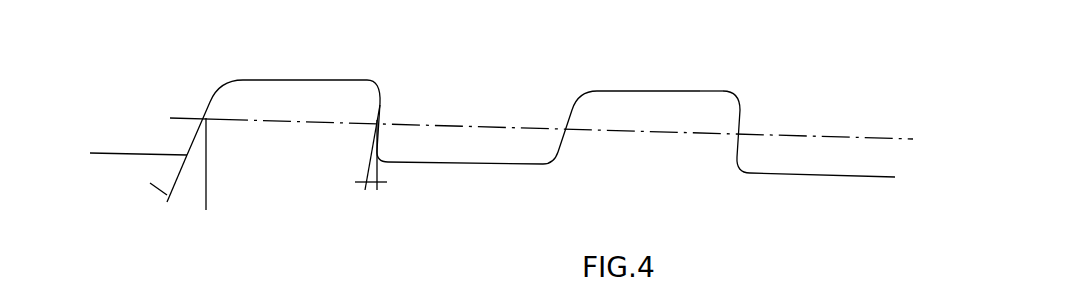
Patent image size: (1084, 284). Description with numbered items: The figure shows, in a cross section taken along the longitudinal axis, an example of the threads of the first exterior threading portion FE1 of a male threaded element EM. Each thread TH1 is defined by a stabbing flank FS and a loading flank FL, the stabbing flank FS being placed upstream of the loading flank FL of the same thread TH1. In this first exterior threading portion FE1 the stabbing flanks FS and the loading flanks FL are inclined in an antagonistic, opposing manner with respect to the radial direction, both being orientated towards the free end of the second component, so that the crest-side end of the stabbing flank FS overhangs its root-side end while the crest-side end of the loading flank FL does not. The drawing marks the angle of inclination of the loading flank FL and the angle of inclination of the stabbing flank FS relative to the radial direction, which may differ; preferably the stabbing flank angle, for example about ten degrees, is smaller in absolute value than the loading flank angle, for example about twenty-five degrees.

The male threaded element EM is at (132, 153).
The loading flank FL is at (206, 106).
The thread of the first threading portion TH1 is at (302, 79).
The first exterior threading portion FE1 is at (704, 80).
The stabbing flank FS is at (383, 109).